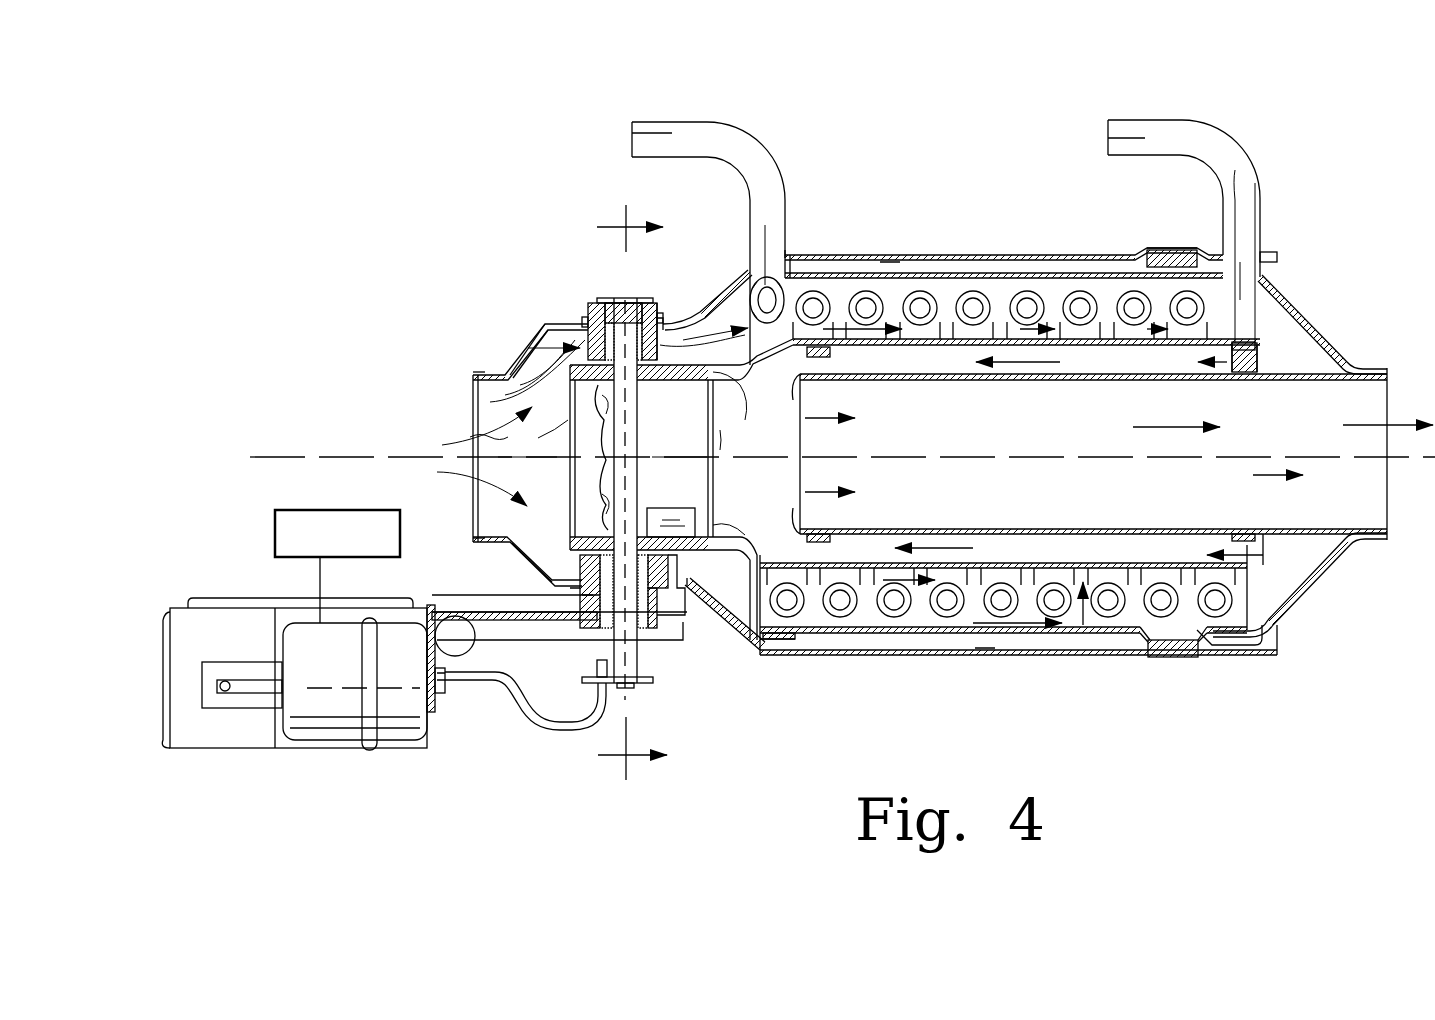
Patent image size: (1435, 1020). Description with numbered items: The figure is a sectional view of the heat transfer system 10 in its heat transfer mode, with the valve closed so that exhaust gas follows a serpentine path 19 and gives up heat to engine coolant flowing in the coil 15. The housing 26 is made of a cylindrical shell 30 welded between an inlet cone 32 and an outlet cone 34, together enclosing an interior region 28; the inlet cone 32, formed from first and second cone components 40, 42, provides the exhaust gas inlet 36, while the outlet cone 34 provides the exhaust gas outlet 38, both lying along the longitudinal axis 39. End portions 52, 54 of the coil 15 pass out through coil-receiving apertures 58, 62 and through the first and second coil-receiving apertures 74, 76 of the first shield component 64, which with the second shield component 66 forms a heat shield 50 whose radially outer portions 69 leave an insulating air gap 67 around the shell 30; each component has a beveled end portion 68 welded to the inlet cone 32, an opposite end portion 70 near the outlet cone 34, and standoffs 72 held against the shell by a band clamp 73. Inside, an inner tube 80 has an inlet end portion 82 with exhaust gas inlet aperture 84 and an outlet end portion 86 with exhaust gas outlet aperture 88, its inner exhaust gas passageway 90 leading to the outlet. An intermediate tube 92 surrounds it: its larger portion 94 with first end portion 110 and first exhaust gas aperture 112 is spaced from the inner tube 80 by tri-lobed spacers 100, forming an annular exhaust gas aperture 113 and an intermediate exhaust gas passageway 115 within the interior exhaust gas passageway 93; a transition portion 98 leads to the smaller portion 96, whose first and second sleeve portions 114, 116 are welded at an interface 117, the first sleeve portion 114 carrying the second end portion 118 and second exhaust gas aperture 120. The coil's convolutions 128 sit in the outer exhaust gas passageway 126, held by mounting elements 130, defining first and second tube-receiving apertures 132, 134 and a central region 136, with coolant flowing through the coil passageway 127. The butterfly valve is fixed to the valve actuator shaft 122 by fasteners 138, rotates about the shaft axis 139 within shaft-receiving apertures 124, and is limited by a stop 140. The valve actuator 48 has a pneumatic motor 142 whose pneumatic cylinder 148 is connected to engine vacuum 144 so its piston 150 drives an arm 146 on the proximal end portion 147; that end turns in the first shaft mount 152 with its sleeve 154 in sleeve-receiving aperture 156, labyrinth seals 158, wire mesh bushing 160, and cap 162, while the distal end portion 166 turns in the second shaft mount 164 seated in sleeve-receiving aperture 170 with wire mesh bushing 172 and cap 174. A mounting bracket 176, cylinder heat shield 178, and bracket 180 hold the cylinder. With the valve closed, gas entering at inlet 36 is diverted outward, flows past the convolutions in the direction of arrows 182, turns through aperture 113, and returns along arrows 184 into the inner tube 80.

The heat transfer system 10 is at (413, 190).
The coil 15 is at (1265, 170).
The serpentine path 19 is at (836, 490).
The housing 26 is at (845, 268).
The interior region 28 is at (708, 300).
The cylindrical shell 30 is at (862, 275).
The inlet cone 32 is at (548, 320).
The outlet cone 34 is at (1305, 312).
The exhaust gas inlet 36 is at (472, 400).
The exhaust gas outlet 38 is at (1390, 392).
The longitudinal axis 39 is at (965, 453).
The first cone component 40 is at (474, 375).
The second cone component 42 is at (473, 542).
The valve actuator 48 is at (668, 676).
The heat shield 50 is at (920, 252).
The end portion of coil 52 is at (775, 162).
The end portion of coil 54 is at (1262, 188).
The coil-receiving aperture 58 is at (786, 252).
The coil-receiving aperture 62 is at (1210, 270).
The first shield component 64 is at (930, 256).
The second shield component 66 is at (945, 645).
The air gap 67 is at (978, 272).
The beveled end portion 68 is at (738, 300).
The radially outer portions 69 is at (888, 256).
The end portion 70 is at (1270, 253).
The standoffs 72 is at (1172, 250).
The band clamp 73 is at (1152, 250).
The first coil-receiving aperture 74 is at (752, 290).
The second coil-receiving aperture 76 is at (1250, 255).
The inner tube 80 is at (1310, 362).
The inlet end portion 82 is at (830, 388).
The exhaust gas inlet aperture 84 is at (798, 476).
The outlet end portion 86 is at (1372, 535).
The exhaust gas outlet aperture 88 is at (1387, 482).
The inner exhaust gas passageway 90 is at (1275, 540).
The intermediate tube 92 is at (1108, 620).
The interior exhaust gas passageway 93 is at (790, 400).
The larger portion 94 is at (1020, 565).
The smaller portion 96 is at (728, 540).
The transition portion 98 is at (700, 588).
The tri-lobed spacers 100 is at (1248, 375).
The first end portion 110 is at (1265, 312).
The first exhaust gas aperture 112 is at (1262, 380).
The annular exhaust gas aperture 113 is at (1327, 355).
The first sleeve portion 114 is at (734, 437).
The intermediate exhaust gas passageway 115 is at (1132, 532).
The second sleeve portion 116 is at (738, 372).
The interface 117 is at (705, 342).
The second end portion 118 is at (550, 421).
The second exhaust gas aperture 120 is at (565, 478).
The valve actuator shaft 122 is at (645, 438).
The shaft-receiving apertures 124 is at (640, 406).
The outer exhaust gas passageway 126 is at (1022, 290).
The coil passageway 127 is at (1015, 580).
The convolutions 128 is at (1082, 290).
The mounting elements 130 is at (810, 272).
The first tube-receiving aperture 132 is at (778, 657).
The second tube-receiving aperture 134 is at (1245, 645).
The central region 136 is at (822, 633).
The fasteners 138 is at (590, 457).
The shaft axis 139 is at (620, 300).
The stop 140 is at (670, 508).
The pneumatic motor 142 is at (455, 698).
The engine vacuum 144 is at (275, 520).
The arm 146 is at (595, 670).
The proximal end portion 147 is at (642, 675).
The pneumatic cylinder 148 is at (385, 745).
The piston 150 is at (558, 731).
The first shaft mount 152 is at (480, 612).
The sleeve 154 is at (567, 603).
The sleeve-receiving aperture 156 is at (560, 576).
The labyrinth seals 158 is at (658, 566).
The wire mesh bushing 160 is at (692, 600).
The cap 162 is at (580, 628).
The second shaft mount 164 is at (597, 298).
The distal end portion 166 is at (538, 352).
The sleeve-receiving aperture 170 is at (582, 306).
The wire mesh bushing 172 is at (659, 315).
The cap 174 is at (633, 302).
The mounting bracket 176 is at (462, 645).
The cylinder heat shield 178 is at (250, 748).
The bracket 180 is at (228, 708).
The arrows 182 is at (1252, 540).
The arrows 184 is at (943, 533).